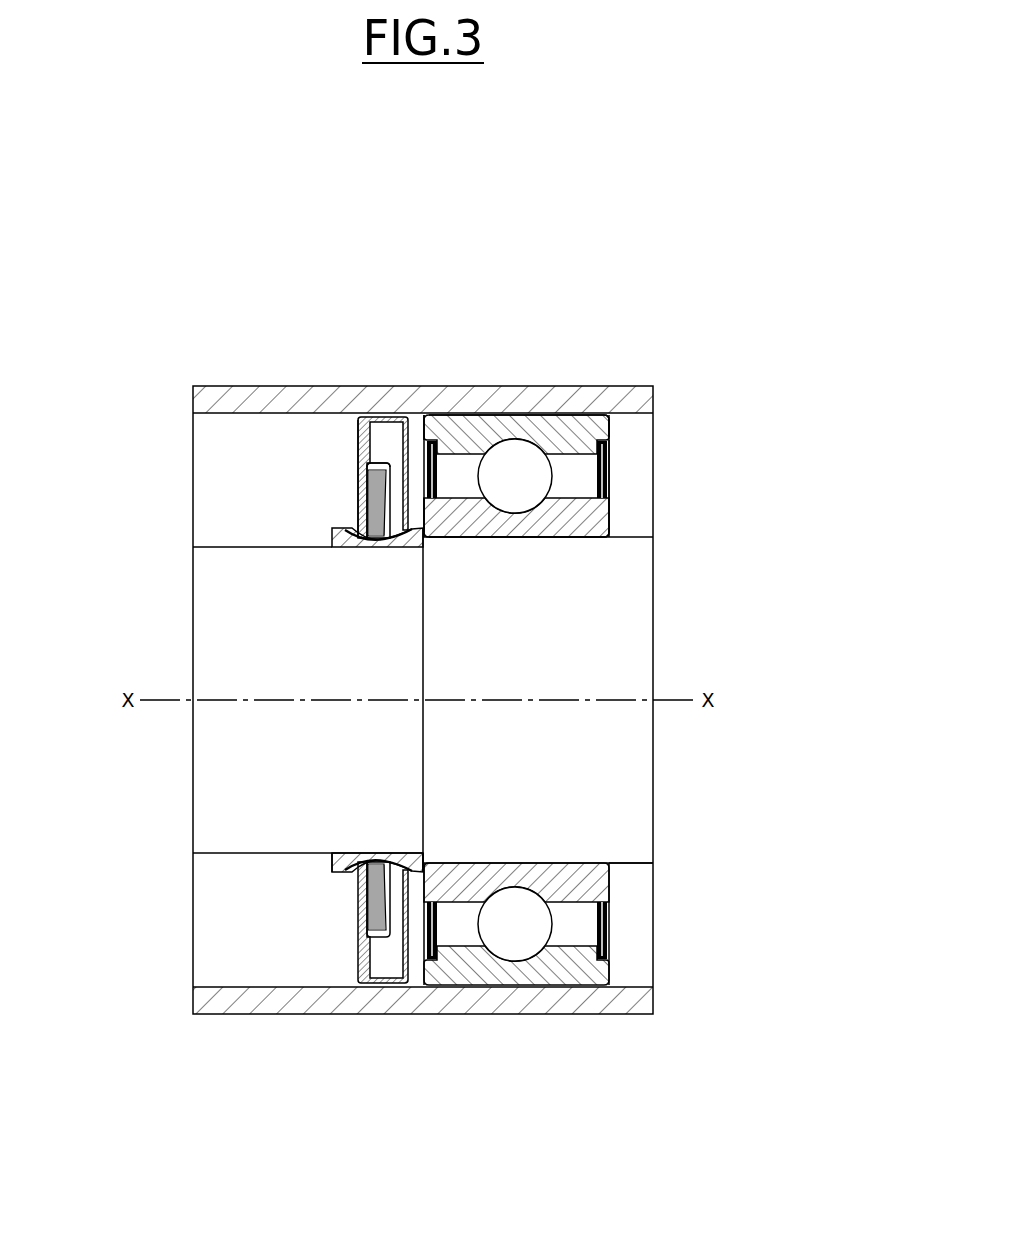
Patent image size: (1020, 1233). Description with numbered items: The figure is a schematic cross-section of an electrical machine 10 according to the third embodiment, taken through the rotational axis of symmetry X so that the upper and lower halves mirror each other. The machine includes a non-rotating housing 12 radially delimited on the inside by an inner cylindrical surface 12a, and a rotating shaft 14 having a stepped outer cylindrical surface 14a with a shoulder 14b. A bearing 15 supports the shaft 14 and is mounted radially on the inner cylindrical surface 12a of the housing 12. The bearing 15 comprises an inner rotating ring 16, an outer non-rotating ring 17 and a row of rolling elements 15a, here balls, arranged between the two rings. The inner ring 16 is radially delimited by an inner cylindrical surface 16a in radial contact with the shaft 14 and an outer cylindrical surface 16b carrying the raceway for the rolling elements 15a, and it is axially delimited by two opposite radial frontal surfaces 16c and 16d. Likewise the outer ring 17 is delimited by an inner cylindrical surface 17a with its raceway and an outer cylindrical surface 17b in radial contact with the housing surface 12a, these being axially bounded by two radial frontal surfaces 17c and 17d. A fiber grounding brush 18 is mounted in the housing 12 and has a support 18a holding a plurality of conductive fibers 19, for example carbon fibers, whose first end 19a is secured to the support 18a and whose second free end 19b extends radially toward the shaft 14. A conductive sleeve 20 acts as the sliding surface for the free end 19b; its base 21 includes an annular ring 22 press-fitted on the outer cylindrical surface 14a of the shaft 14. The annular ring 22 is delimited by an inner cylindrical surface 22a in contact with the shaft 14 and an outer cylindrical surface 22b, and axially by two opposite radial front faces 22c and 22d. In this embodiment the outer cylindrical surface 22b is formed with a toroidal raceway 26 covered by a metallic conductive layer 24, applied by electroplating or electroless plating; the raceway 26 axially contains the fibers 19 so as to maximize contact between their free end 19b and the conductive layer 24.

The electrical machine 10 is at (714, 310).
The housing 12 is at (645, 382).
The inner cylindrical surface 12a is at (228, 413).
The rotating shaft 14 is at (653, 613).
The outer cylindrical surface 14a is at (228, 853).
The shoulder 14b is at (653, 870).
The bearing 15 is at (636, 472).
The rolling elements 15a is at (516, 476).
The inner ring 16 is at (577, 529).
The inner cylindrical surface 16a is at (528, 540).
The outer cylindrical surface 16b is at (611, 487).
The radial frontal surface 16c is at (428, 540).
The radial frontal surface 16d is at (611, 518).
The outer ring 17 is at (563, 430).
The inner cylindrical surface 17a is at (611, 462).
The outer cylindrical surface 17b is at (500, 413).
The radial frontal surface 17c is at (419, 428).
The radial frontal surface 17d is at (612, 428).
The fiber grounding brush 18 is at (351, 465).
The support 18a is at (357, 442).
The conductive fibers 19 is at (375, 507).
The first end 19a is at (375, 477).
The second free end 19b is at (342, 532).
The conductive sleeve 20 is at (324, 553).
The base 21 is at (428, 858).
The annular ring 22 is at (398, 857).
The inner cylindrical surface 22a is at (357, 855).
The outer cylindrical surface 22b is at (340, 872).
The radial front face 22c is at (318, 852).
The radial front face 22d is at (437, 857).
The conductive layer 24 is at (395, 548).
The raceway 26 is at (355, 895).